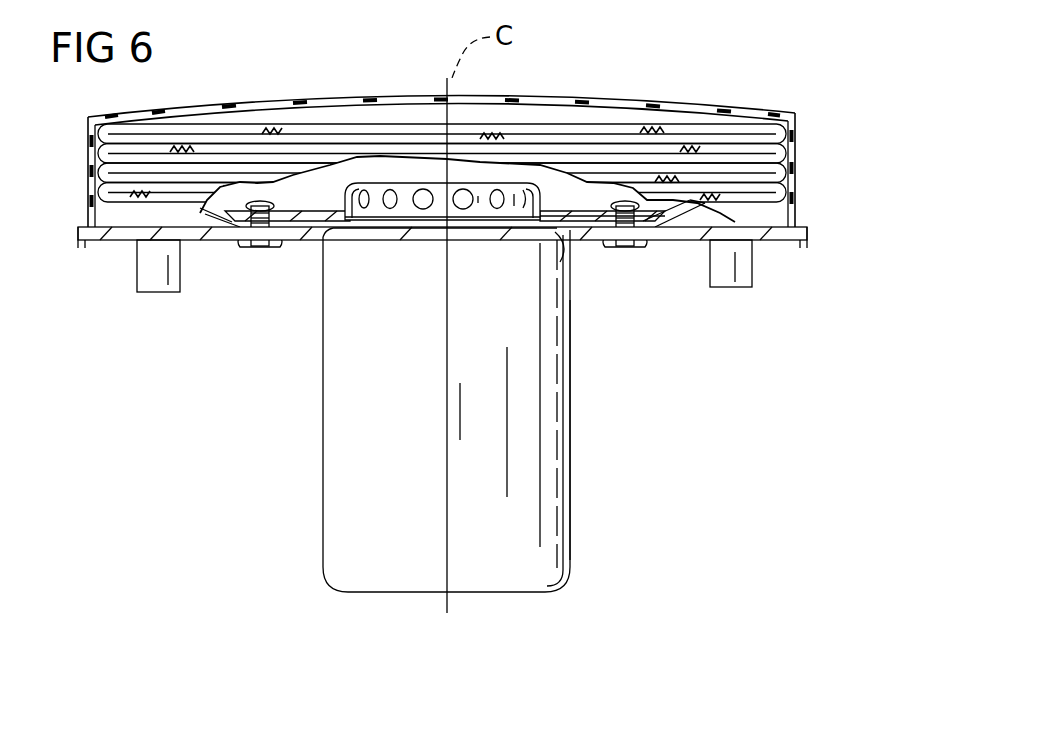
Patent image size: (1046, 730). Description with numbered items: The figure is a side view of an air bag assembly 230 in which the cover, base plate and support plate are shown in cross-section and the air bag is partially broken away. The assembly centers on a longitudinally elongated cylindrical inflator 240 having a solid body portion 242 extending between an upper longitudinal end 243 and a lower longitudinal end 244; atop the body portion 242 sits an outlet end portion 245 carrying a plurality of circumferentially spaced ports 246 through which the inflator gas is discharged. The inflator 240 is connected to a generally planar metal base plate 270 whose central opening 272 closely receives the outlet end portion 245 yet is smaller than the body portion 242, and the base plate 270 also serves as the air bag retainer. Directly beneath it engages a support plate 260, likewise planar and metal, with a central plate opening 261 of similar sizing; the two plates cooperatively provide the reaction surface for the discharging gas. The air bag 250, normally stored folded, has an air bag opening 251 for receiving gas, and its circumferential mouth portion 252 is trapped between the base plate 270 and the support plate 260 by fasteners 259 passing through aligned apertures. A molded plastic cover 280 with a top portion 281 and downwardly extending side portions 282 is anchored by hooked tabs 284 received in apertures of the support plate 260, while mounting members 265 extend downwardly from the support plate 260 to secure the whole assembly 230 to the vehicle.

The air bag assembly 230 is at (765, 88).
The inflator 240 is at (588, 436).
The body portion 242 is at (350, 480).
The upper longitudinal end 243 is at (322, 256).
The lower longitudinal end 244 is at (520, 540).
The outlet end portion 245 is at (360, 186).
The ports 246 is at (421, 188).
The air bag 250 is at (180, 147).
The air bag opening 251 is at (245, 236).
The circumferential mouth portion 252 is at (667, 227).
The fasteners 259 is at (262, 250).
The support plate 260 is at (685, 230).
The central plate opening 261 is at (557, 258).
The mounting members 265 is at (143, 268).
The base plate 270 is at (595, 175).
The central opening 272 is at (335, 172).
The cover 280 is at (520, 90).
The top portion 281 is at (566, 100).
The side portions 282 is at (792, 152).
The tabs 284 is at (787, 236).